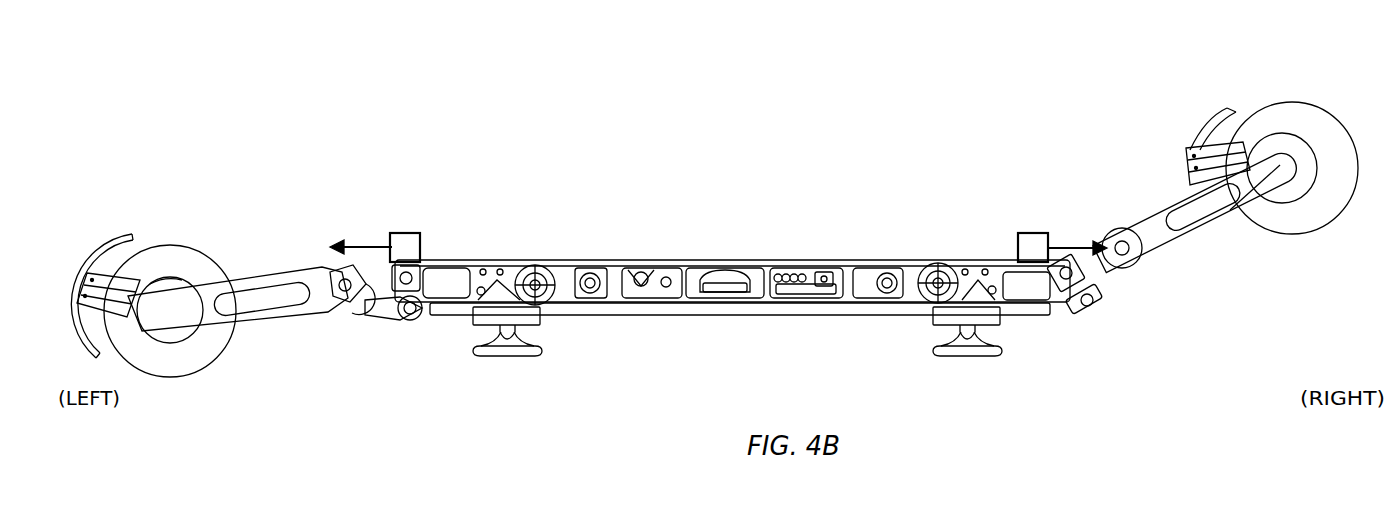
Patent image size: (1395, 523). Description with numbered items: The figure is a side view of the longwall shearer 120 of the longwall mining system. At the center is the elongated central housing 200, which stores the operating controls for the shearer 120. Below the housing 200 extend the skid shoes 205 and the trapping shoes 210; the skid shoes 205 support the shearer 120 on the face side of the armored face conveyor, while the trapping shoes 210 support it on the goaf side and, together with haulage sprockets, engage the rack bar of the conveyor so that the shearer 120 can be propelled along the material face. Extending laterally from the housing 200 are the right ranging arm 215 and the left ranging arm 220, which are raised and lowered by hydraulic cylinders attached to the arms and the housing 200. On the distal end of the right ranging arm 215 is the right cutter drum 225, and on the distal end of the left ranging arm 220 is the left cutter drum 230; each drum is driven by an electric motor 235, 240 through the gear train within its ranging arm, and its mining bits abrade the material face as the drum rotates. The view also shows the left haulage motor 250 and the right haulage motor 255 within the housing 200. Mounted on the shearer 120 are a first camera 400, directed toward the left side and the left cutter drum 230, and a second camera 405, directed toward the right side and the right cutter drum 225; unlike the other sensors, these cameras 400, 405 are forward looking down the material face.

The shearer 120 is at (1304, 74).
The elongated central housing 200 is at (720, 257).
The skid shoes 205 is at (510, 356).
The trapping shoes 210 is at (538, 330).
The right ranging arm 215 is at (1153, 250).
The left ranging arm 220 is at (280, 282).
The right cutter drum 225 is at (1285, 218).
The left cutter drum 230 is at (168, 360).
The electric motor 235 is at (1128, 262).
The electric motor 240 is at (367, 303).
The left haulage motor 250 is at (532, 266).
The right haulage motor 255 is at (934, 262).
The first camera 400 is at (400, 233).
The second camera 405 is at (1032, 233).